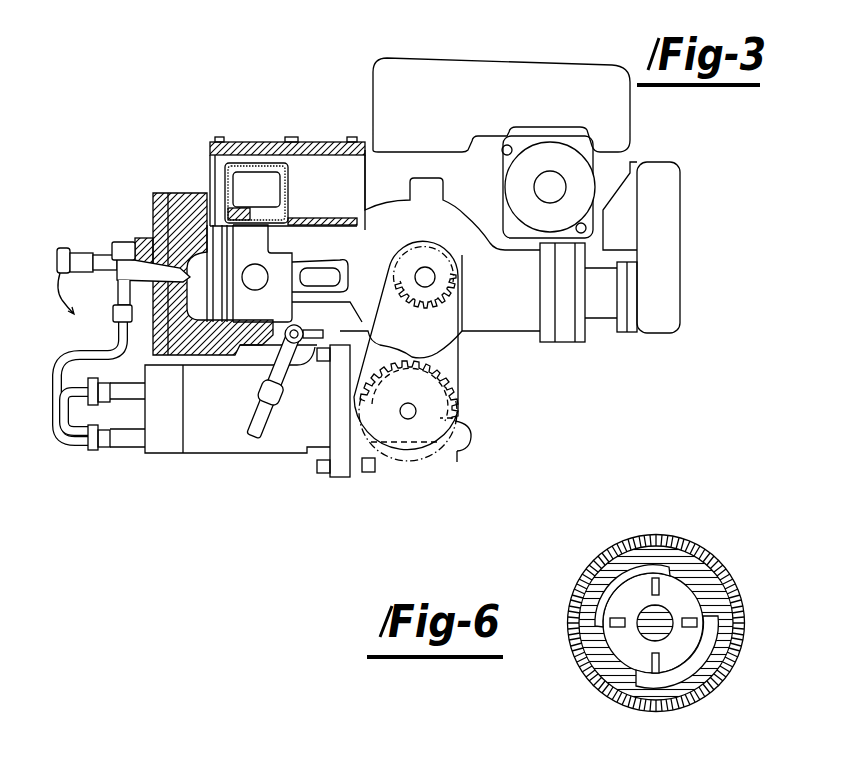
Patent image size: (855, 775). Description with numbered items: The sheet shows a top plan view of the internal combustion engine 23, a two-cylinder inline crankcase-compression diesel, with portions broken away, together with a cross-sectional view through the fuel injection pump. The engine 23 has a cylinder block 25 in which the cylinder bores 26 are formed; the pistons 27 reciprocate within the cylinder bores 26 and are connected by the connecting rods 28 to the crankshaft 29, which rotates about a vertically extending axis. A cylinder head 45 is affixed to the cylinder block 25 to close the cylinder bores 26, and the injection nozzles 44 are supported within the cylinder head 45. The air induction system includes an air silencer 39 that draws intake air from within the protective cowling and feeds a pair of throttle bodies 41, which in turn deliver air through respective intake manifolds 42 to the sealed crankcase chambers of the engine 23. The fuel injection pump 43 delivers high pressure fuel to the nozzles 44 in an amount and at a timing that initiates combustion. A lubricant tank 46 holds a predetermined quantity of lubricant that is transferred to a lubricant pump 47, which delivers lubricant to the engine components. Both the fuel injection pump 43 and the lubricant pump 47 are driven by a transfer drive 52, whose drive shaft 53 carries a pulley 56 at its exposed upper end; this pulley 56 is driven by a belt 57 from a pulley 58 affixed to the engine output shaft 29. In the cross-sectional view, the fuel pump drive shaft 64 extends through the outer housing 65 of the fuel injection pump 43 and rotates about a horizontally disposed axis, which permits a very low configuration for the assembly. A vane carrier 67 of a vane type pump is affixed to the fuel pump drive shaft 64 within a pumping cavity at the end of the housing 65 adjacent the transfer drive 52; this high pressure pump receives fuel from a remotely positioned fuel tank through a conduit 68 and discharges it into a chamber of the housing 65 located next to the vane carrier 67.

In FIG. 3, the internal combustion engine 23 is at (235, 141).
In FIG. 3, the cylinder block 25 is at (267, 138).
In FIG. 3, the cylinder bores 26 is at (313, 218).
In FIG. 3, the pistons 27 is at (281, 316).
In FIG. 3, the connecting rods 28 is at (306, 262).
In FIG. 3, the crankshaft 29 is at (435, 268).
In FIG. 3, the air silencer 39 is at (670, 268).
In FIG. 3, the throttle bodies 41 is at (600, 312).
In FIG. 3, the intake manifolds 42 is at (512, 320).
In FIG. 3, the fuel injection pump 43 is at (217, 437).
In FIG. 6, the fuel injection pump 43 is at (567, 631).
In FIG. 3, the injection nozzles 44 is at (150, 236).
In FIG. 3, the cylinder head 45 is at (183, 192).
In FIG. 3, the lubricant tank 46 is at (458, 60).
In FIG. 3, the lubricant pump 47 is at (470, 449).
In FIG. 3, the transfer drive 52 is at (357, 452).
In FIG. 3, the drive shaft 53 is at (405, 415).
In FIG. 3, the pulley 56 is at (457, 452).
In FIG. 3, the belt 57 is at (468, 440).
In FIG. 3, the pulley 58 is at (460, 387).
In FIG. 6, the fuel pump drive shaft 64 is at (658, 610).
In FIG. 6, the outer housing 65 is at (604, 697).
In FIG. 6, the vane carrier 67 is at (683, 608).
In FIG. 6, the conduit 68 is at (487, 765).